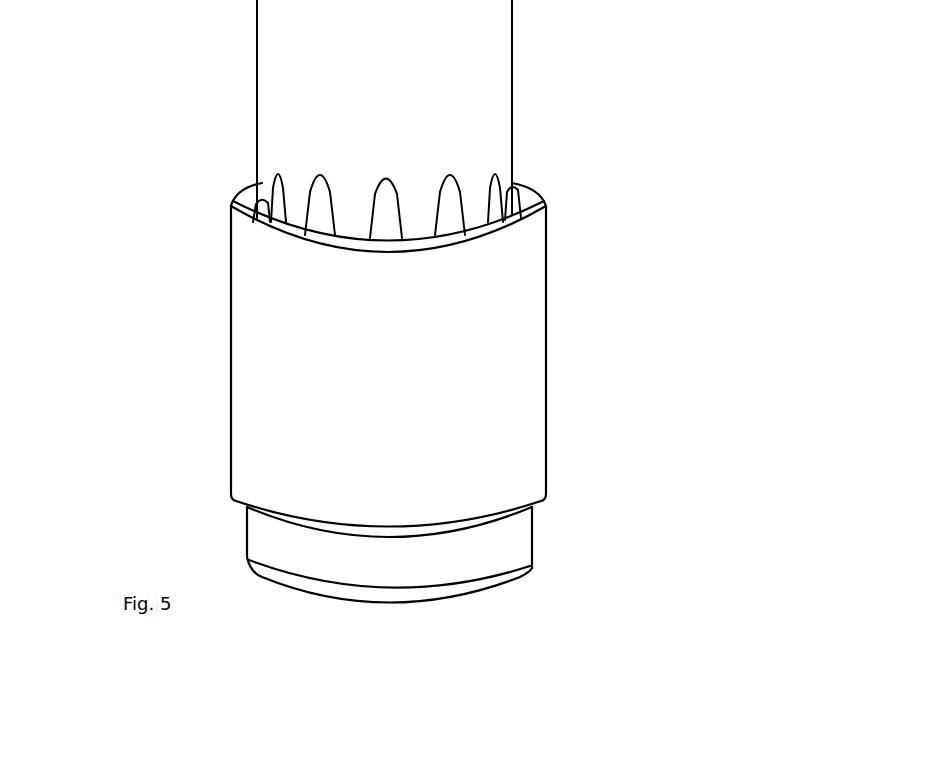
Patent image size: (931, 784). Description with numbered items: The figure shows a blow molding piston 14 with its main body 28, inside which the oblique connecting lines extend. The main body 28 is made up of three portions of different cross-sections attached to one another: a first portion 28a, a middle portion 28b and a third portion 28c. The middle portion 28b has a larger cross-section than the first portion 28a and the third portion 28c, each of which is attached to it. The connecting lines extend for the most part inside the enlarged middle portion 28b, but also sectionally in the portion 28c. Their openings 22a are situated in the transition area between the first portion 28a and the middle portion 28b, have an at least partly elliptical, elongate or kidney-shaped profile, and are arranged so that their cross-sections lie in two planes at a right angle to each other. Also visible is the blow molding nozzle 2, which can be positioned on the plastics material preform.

The first portion 28a is at (308, 65).
The openings 22a is at (450, 217).
The middle portion 28b is at (320, 333).
The third portion 28c is at (320, 562).
The blow molding nozzle 2 is at (428, 598).
The main body 28 is at (624, 234).
The blow molding piston 14 is at (661, 268).